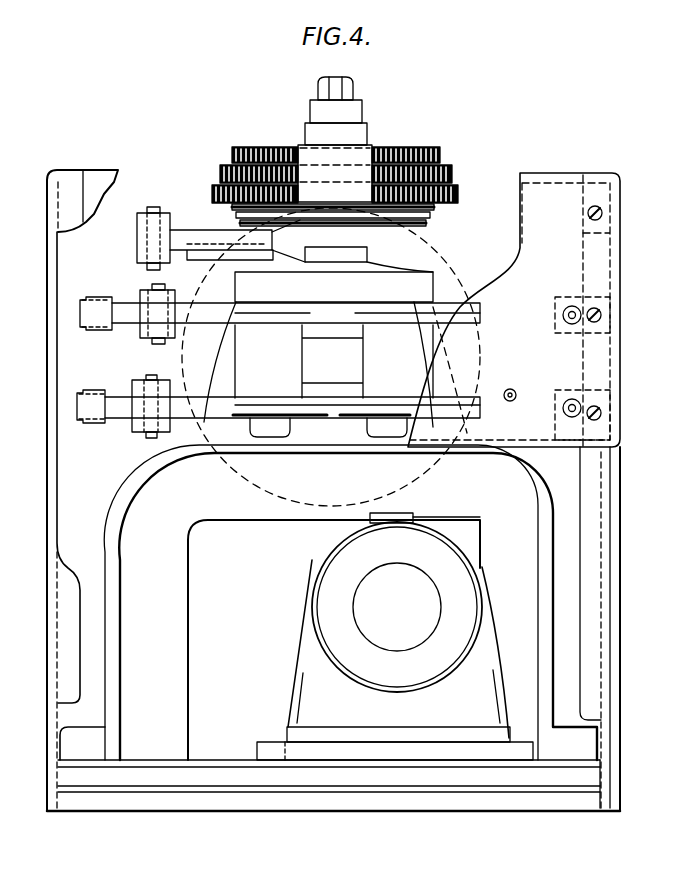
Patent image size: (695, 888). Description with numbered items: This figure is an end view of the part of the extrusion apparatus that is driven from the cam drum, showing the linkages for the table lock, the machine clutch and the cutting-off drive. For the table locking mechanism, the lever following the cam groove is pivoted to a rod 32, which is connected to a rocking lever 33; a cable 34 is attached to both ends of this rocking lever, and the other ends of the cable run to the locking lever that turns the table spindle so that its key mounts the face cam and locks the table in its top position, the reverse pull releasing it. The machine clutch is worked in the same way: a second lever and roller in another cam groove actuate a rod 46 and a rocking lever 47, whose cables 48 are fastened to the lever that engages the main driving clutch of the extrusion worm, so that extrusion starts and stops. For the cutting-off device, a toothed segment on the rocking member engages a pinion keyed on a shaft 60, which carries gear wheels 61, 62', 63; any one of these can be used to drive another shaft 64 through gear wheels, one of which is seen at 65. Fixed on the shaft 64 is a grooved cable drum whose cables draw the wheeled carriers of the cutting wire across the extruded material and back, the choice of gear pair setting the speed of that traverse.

The rod 32 is at (150, 326).
The rocking lever 33 is at (207, 313).
The cable 34 is at (98, 313).
The rod 46 is at (140, 388).
The rocking lever 47 is at (192, 405).
The cables 48 is at (93, 407).
The shaft 60 is at (370, 266).
The gear wheel 61 is at (443, 196).
The gear wheel 62' is at (352, 161).
The gear wheel 63 is at (383, 152).
The shaft 64 is at (333, 80).
The gear wheel 65 is at (317, 193).